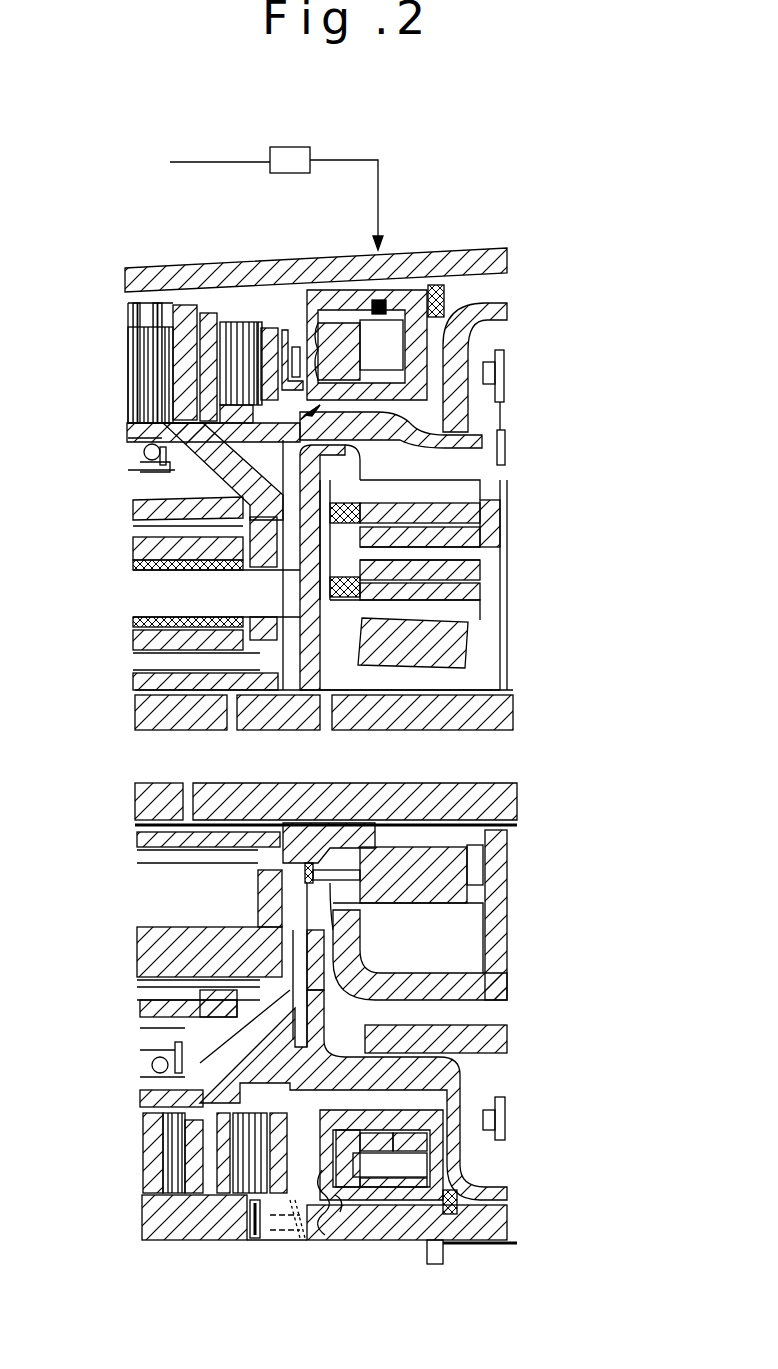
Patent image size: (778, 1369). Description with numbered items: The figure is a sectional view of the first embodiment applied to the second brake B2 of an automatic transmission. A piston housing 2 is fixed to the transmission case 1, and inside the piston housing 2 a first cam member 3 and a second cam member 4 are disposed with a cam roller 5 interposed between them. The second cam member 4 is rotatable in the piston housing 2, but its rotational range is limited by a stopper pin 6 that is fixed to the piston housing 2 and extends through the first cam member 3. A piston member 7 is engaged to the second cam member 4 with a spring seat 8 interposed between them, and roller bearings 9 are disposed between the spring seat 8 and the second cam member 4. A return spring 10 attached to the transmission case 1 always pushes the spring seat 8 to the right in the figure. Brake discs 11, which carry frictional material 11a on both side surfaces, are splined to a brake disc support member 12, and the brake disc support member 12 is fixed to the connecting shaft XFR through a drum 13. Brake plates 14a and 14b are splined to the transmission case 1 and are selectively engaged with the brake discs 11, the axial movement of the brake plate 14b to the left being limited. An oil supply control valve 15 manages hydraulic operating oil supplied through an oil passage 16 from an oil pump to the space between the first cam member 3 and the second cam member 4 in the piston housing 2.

The transmission case 1 is at (495, 261).
The piston housing 2 is at (480, 307).
The first cam member 3 is at (447, 288).
The second cam member 4 is at (333, 300).
The cam roller 5 is at (410, 300).
The stopper pin 6 is at (410, 1165).
The piston member 7 is at (272, 328).
The spring seat 8 is at (340, 1237).
The roller bearings 9 is at (297, 330).
The return spring 10 is at (257, 1238).
The brake discs 11 is at (212, 330).
The frictional material 11a is at (203, 312).
The brake disc support member 12 is at (415, 433).
The drum 13 is at (460, 437).
The brake plate 14a is at (228, 325).
The brake plate 14b is at (185, 312).
The oil supply control valve 15 is at (312, 152).
The oil passage 16 is at (392, 300).
The second brake B2 is at (178, 512).
The connecting shaft XFR is at (447, 643).